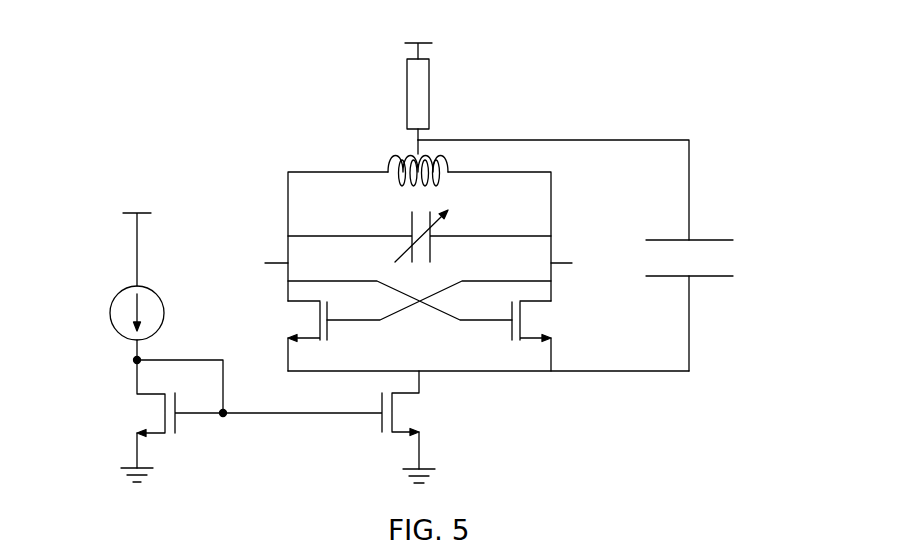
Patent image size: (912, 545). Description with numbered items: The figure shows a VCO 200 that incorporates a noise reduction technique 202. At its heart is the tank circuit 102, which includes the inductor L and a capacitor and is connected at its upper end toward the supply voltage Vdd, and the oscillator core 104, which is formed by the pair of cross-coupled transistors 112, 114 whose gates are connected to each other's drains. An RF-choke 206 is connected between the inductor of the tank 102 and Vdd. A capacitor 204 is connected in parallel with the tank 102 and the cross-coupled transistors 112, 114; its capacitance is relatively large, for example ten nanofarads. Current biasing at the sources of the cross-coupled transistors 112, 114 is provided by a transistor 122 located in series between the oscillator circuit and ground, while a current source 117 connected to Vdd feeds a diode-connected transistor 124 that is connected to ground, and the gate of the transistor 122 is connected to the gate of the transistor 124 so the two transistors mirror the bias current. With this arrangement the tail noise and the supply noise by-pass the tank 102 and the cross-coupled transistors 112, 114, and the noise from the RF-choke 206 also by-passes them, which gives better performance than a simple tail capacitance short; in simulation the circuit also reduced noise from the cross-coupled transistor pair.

The VCO 200 is at (426, 249).
The noise reduction technique 202 is at (709, 160).
The capacitor 204 is at (713, 238).
The RF-choke T1 206 is at (407, 94).
The tank circuit 102 is at (571, 191).
The oscillator core 104 is at (476, 326).
The cross-coupled transistor 112 is at (327, 336).
The cross-coupled transistor 114 is at (512, 334).
The current source 117 is at (110, 310).
The transistor 122 is at (402, 432).
The diode-connected transistor 124 is at (155, 435).